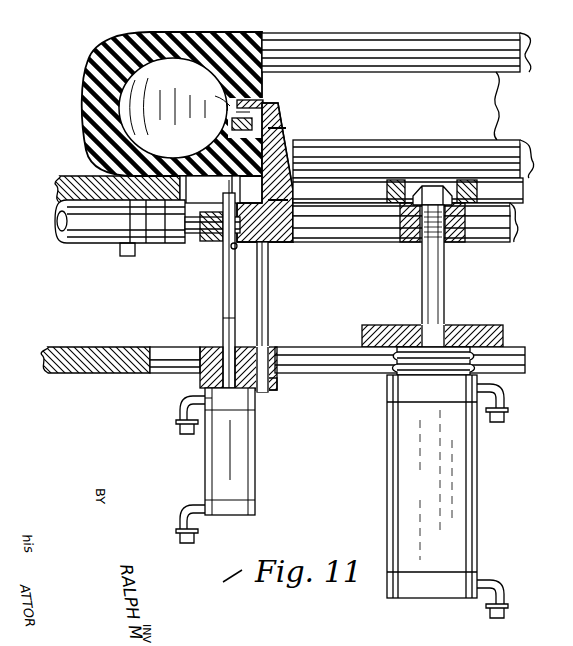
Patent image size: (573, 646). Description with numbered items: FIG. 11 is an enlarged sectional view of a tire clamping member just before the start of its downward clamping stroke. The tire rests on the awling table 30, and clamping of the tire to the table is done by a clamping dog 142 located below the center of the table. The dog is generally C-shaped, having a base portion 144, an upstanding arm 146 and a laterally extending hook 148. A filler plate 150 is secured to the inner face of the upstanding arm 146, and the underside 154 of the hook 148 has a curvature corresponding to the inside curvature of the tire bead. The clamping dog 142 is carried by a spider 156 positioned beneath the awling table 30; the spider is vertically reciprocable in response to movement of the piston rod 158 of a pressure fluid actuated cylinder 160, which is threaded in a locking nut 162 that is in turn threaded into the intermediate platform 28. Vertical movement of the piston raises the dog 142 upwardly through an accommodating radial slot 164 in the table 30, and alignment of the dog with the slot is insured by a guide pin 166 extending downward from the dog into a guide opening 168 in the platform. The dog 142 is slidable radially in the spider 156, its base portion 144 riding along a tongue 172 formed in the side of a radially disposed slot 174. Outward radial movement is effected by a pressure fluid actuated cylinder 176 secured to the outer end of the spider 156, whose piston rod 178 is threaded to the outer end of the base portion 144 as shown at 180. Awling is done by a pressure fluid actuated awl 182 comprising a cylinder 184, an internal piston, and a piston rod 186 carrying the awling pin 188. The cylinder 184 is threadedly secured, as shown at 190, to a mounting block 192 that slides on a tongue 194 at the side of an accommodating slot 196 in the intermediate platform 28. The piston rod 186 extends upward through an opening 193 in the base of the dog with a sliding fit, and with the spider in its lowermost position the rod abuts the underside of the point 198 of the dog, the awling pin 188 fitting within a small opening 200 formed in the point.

The intermediate platform 28 is at (73, 348).
The awling table 30 is at (72, 177).
The clamping dog 142 is at (287, 114).
The base portion 144 is at (201, 242).
The upstanding arm 146 is at (296, 190).
The hook 148 is at (257, 103).
The filler plate 150 is at (292, 130).
The underside of hook 154 is at (240, 128).
The spider 156 is at (514, 223).
The piston rod 158 is at (446, 286).
The pressure fluid actuated cylinder 160 is at (478, 464).
The locking nut 162 is at (482, 326).
The radial slot 164 is at (384, 170).
The guide pin 166 is at (263, 393).
The guide opening 168 is at (272, 384).
The tongue 172 is at (352, 230).
The radially disposed slot 174 is at (304, 225).
The pressure fluid actuated cylinder 176 is at (67, 243).
The piston rod 178 is at (186, 244).
The threaded connection 180 is at (222, 244).
The awl 182 is at (215, 302).
The pressure fluid actuating cylinder 184 is at (204, 483).
The piston rod 186 is at (223, 320).
The awling pin 188 is at (232, 190).
The threaded securement 190 is at (208, 400).
The mounting block 192 is at (211, 349).
The opening 193 is at (236, 250).
The tongue 194 is at (176, 374).
The accommodating slot 196 is at (170, 350).
The point 198 is at (232, 102).
The small opening 200 is at (236, 114).